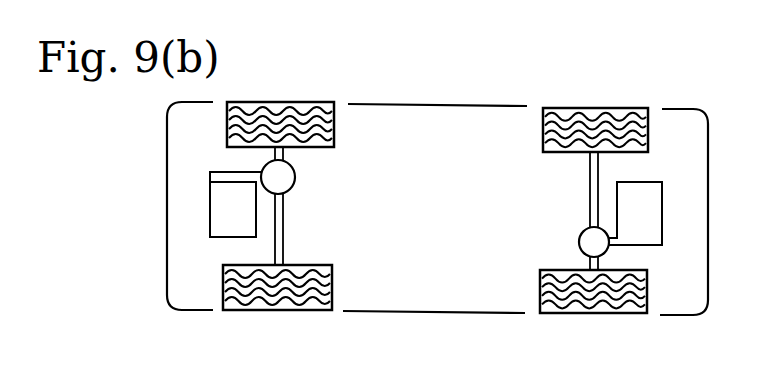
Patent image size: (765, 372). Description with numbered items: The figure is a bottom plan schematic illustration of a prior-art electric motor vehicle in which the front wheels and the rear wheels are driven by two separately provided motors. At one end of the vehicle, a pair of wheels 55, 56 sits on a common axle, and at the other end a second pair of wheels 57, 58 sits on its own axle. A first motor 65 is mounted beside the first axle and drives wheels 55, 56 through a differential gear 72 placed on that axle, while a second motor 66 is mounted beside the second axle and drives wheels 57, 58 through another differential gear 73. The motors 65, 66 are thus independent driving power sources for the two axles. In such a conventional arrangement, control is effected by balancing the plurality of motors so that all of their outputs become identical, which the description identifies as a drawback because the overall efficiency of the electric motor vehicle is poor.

The wheel 55 is at (292, 102).
The wheel 56 is at (300, 311).
The wheel 57 is at (583, 108).
The wheel 58 is at (615, 315).
The motor 65 is at (244, 219).
The motor 66 is at (649, 223).
The differential gear 72 is at (295, 177).
The differential gear 73 is at (592, 242).